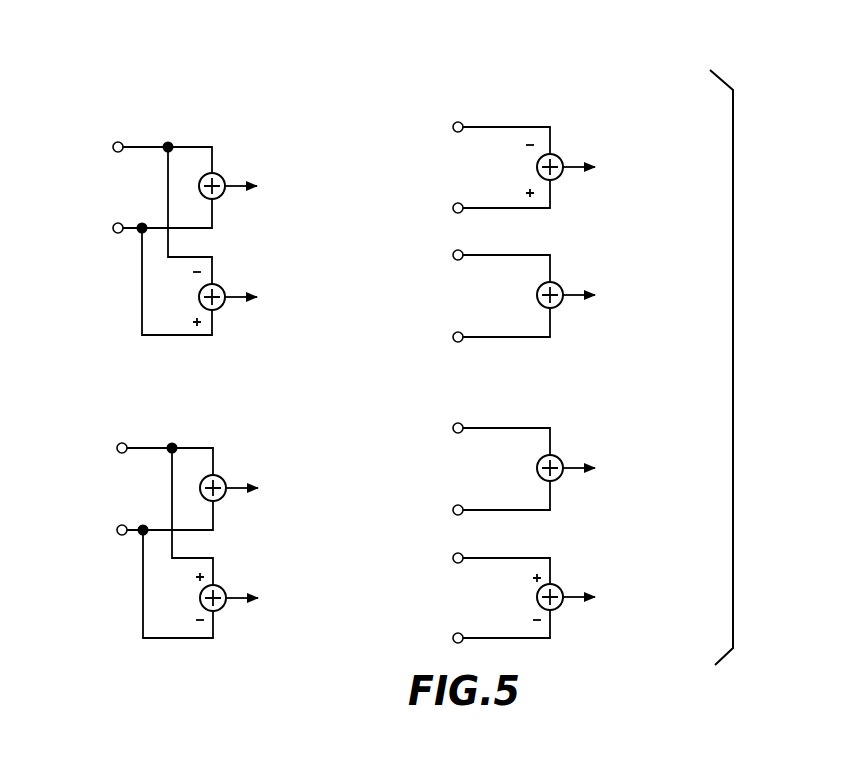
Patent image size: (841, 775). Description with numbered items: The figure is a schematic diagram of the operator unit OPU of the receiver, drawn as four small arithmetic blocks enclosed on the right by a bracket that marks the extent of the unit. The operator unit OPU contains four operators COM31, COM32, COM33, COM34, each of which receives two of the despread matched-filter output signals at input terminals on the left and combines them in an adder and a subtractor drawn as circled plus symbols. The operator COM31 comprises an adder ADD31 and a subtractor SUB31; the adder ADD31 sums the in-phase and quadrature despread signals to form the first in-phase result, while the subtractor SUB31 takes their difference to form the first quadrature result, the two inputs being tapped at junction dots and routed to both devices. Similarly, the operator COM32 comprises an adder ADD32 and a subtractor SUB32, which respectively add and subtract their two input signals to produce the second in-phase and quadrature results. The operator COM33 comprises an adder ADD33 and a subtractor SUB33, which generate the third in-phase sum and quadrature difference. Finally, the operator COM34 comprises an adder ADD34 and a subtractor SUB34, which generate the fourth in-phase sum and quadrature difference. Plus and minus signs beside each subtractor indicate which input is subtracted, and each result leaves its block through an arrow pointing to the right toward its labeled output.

The operator unit OPU is at (605, 70).
The operator COM31 is at (121, 105).
The operator COM32 is at (397, 104).
The operator COM33 is at (116, 409).
The operator COM34 is at (406, 406).
The adder ADD31 is at (222, 177).
The subtractor SUB31 is at (222, 287).
The adder ADD32 is at (563, 283).
The subtractor SUB32 is at (563, 155).
The adder ADD33 is at (223, 478).
The subtractor SUB33 is at (221, 611).
The adder ADD34 is at (562, 483).
The subtractor SUB34 is at (560, 610).